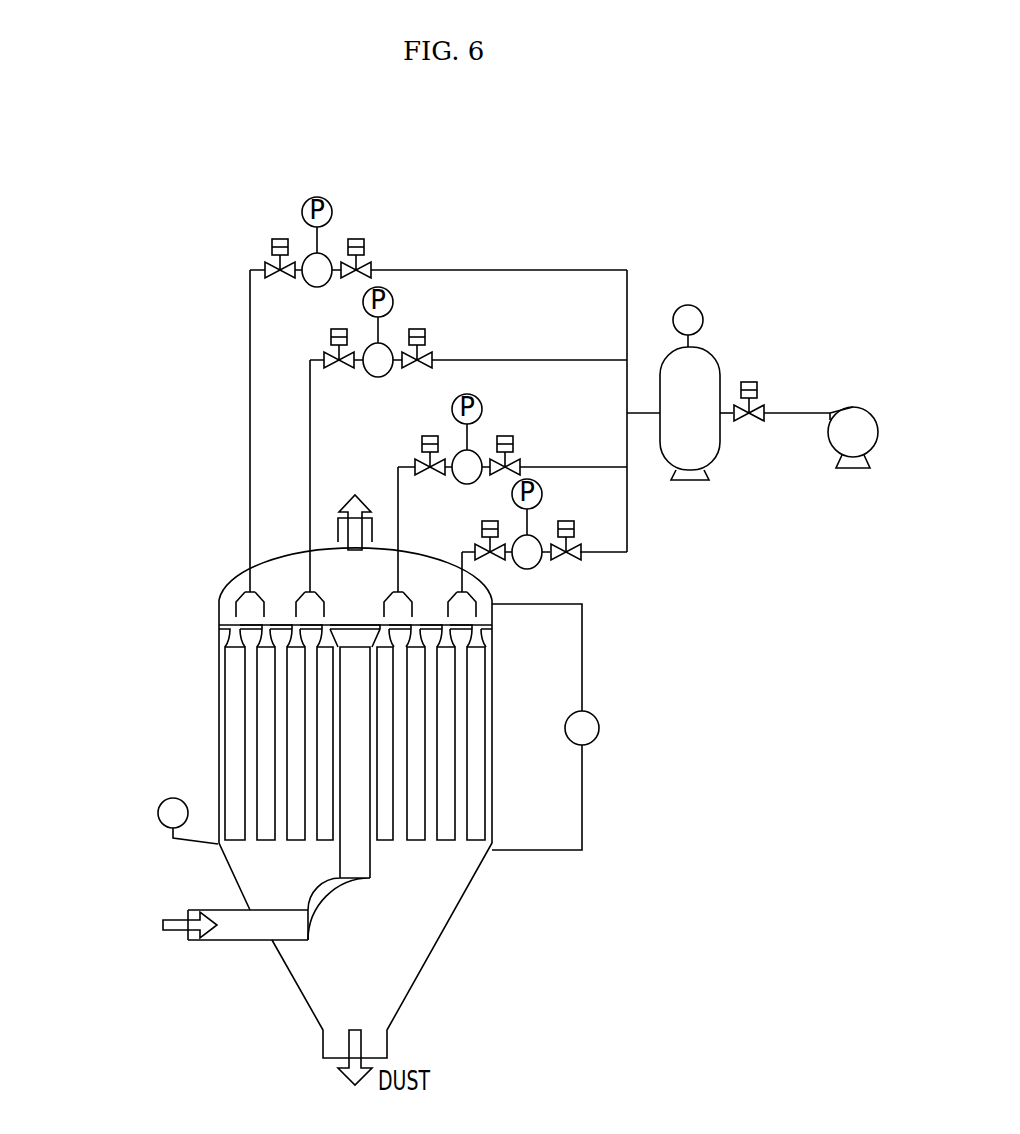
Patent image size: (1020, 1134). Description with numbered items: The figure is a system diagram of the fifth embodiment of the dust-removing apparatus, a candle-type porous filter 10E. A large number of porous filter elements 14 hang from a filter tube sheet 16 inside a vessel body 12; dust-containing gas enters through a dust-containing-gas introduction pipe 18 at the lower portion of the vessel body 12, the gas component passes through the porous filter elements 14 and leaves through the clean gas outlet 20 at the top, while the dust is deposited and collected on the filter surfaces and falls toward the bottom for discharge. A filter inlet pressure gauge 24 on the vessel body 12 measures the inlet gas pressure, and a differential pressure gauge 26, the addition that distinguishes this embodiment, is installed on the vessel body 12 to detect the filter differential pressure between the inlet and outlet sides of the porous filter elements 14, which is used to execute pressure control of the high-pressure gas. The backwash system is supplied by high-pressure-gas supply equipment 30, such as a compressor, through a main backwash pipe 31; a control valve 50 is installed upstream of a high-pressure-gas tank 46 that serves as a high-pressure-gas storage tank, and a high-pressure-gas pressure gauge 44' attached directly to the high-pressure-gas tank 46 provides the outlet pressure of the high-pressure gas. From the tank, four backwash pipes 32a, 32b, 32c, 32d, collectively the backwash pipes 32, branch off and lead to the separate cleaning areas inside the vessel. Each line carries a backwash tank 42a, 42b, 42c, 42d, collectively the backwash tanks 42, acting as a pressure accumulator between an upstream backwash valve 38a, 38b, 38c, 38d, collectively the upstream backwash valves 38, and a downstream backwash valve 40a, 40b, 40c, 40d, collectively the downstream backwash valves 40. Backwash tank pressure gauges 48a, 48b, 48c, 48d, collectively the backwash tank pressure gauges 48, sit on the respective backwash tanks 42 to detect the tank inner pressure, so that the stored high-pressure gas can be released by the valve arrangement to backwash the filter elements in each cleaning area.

The porous filter 10E is at (672, 700).
The vessel body 12 is at (493, 832).
The porous filter elements 14 is at (487, 772).
The filter tube sheet 16 is at (478, 606).
The dust-containing-gas introduction pipe 18 is at (212, 945).
The clean gas outlet 20 is at (338, 530).
The filter inlet pressure gauge 24 is at (168, 797).
The differential pressure gauge 26 is at (593, 716).
The high-pressure-gas supply equipment 30 is at (850, 407).
The main backwash pipe 31 is at (797, 402).
The backwash pipes 32 is at (618, 262).
The backwash pipe 32a is at (505, 268).
The backwash pipe 32b is at (555, 360).
The backwash pipe 32c is at (600, 465).
The backwash pipe 32d is at (612, 552).
The upstream backwash valves 38 is at (402, 224).
The upstream backwash valve 38a is at (366, 244).
The upstream backwash valve 38b is at (428, 338).
The upstream backwash valve 38c is at (516, 440).
The upstream backwash valve 38d is at (575, 524).
The downstream backwash valves 40 is at (236, 244).
The downstream backwash valve 40a is at (268, 242).
The downstream backwash valve 40b is at (330, 340).
The downstream backwash valve 40c is at (422, 440).
The downstream backwash valve 40d is at (482, 530).
The backwash tanks 42 is at (317, 233).
The backwash tank 42a is at (330, 258).
The backwash tank 42b is at (392, 345).
The backwash tank 42c is at (478, 452).
The backwash tank 42d is at (538, 565).
The high-pressure-gas pressure gauge 44' is at (703, 296).
The high-pressure-gas tank 46 is at (715, 362).
The backwash tank pressure gauges 48 is at (310, 195).
The backwash tank pressure gauge 48a is at (322, 196).
The backwash tank pressure gauge 48b is at (362, 302).
The backwash tank pressure gauge 48c is at (482, 400).
The backwash tank pressure gauge 48d is at (543, 494).
The control valve 50 is at (752, 425).